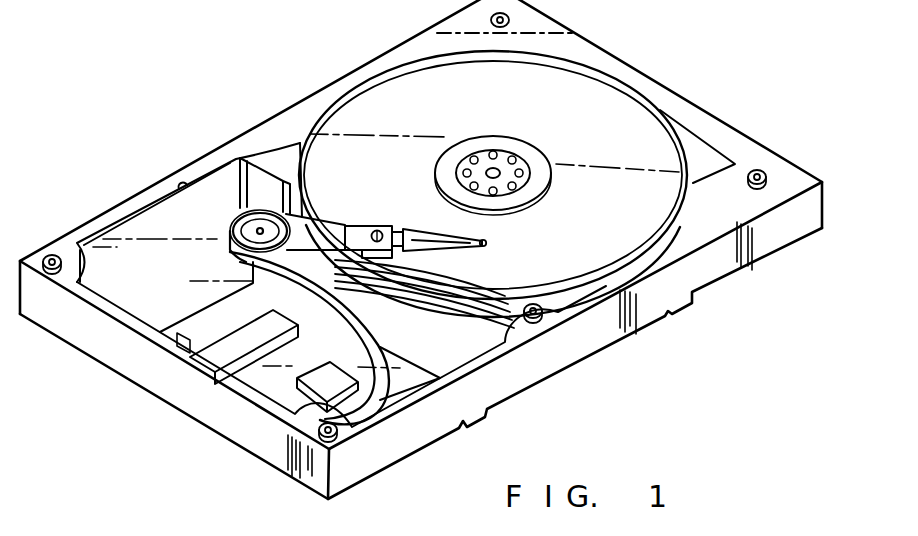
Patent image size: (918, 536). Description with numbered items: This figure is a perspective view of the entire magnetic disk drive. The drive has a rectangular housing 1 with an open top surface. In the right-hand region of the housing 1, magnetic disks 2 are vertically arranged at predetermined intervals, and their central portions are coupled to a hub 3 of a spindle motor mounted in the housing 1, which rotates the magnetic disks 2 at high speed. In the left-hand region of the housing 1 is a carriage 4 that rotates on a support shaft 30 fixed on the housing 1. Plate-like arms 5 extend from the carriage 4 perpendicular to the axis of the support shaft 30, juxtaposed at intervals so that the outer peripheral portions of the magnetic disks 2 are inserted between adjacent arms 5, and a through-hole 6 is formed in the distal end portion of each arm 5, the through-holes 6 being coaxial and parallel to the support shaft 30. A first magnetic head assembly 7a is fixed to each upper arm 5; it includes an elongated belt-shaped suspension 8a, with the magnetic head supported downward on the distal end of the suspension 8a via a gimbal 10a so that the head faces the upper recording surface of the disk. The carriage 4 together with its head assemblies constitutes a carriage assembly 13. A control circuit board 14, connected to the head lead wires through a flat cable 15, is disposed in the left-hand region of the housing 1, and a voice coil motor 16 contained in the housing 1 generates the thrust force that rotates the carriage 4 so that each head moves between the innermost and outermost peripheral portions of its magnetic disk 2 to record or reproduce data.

The housing 1 is at (603, 334).
The magnetic disks 2 is at (480, 310).
The hub 3 is at (533, 153).
The carriage 4 is at (304, 225).
The arms 5 is at (340, 258).
The through-hole 6 is at (378, 230).
The first magnetic head assembly 7a is at (411, 217).
The suspension 8a is at (447, 226).
The gimbal 10a is at (484, 246).
The carriage assembly 13 is at (335, 205).
The control circuit board 14 is at (270, 392).
The flat cable 15 is at (303, 272).
The voice coil motor 16 is at (136, 297).
The support shaft 30 is at (245, 157).